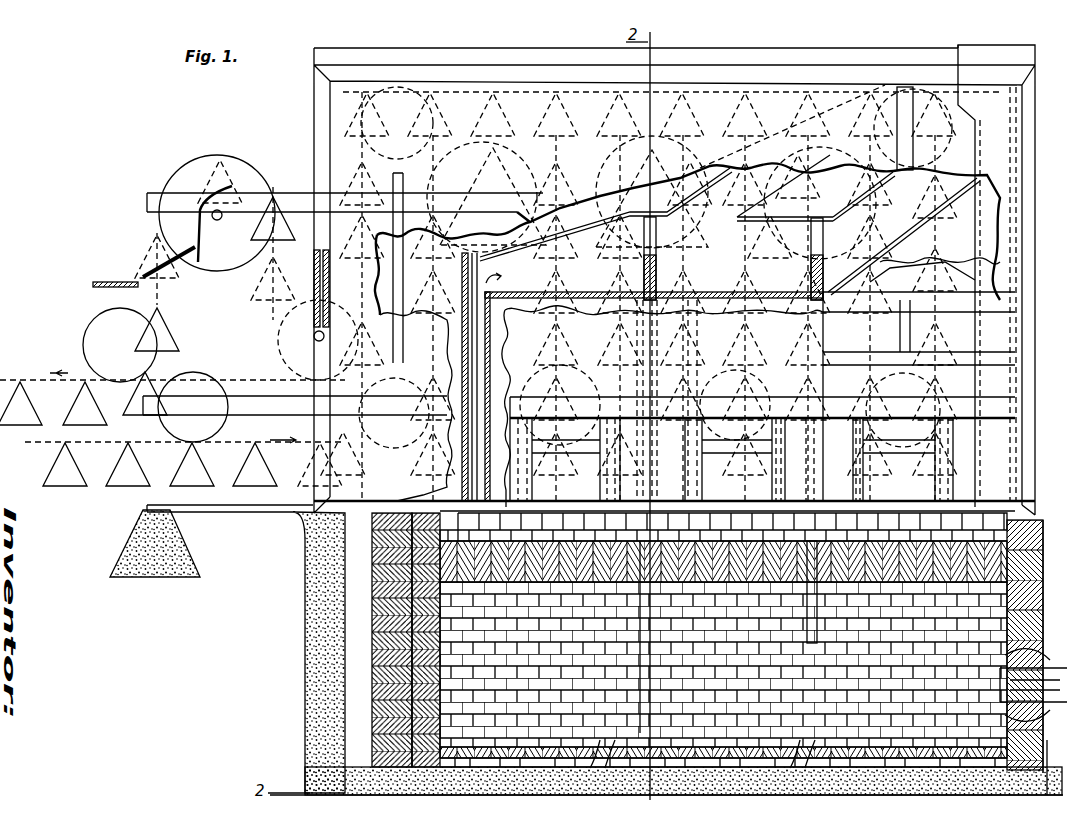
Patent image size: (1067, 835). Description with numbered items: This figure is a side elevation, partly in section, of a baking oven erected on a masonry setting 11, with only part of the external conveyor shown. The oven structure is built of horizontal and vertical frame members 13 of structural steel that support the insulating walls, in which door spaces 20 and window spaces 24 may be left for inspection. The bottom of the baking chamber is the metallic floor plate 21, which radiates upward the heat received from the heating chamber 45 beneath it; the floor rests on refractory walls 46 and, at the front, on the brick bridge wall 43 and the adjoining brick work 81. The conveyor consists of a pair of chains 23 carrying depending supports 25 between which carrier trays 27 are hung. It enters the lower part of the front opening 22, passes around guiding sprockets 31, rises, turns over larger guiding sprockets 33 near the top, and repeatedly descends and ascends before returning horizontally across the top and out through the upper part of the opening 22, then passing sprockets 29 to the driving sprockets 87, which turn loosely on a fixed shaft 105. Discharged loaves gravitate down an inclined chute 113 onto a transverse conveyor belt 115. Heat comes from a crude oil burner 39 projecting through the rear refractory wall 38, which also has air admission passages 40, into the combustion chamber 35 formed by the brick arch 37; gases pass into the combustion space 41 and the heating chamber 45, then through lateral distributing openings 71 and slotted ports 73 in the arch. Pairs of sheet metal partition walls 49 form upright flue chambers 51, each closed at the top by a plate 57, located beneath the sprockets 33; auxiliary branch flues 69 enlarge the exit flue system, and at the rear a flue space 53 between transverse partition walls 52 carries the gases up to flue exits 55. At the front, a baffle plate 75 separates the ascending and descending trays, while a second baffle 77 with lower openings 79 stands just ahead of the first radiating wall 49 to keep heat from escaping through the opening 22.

The masonry setting 11 is at (306, 570).
The frame members 13 is at (316, 107).
The door spaces 20 is at (745, 502).
The floor plate 21 is at (512, 506).
The entrance-exit opening 22 is at (316, 346).
The chains 23 is at (440, 90).
The window spaces 24 is at (960, 282).
The depending supports 25 is at (548, 113).
The carrier tray 27 is at (680, 114).
The guiding sprockets 29 is at (305, 372).
The guiding sprockets 31 is at (378, 103).
The larger guiding sprockets 33 is at (522, 182).
The combustion chamber 35 is at (938, 512).
The brick arch 37 is at (760, 510).
The refractory wall 38 is at (1030, 524).
The crude oil burner 39 is at (1000, 670).
The air admission passages 40 is at (996, 776).
The combustion space 41 is at (412, 665).
The bridge wall 43 is at (373, 617).
The heating chamber 45 is at (622, 508).
The refractory walls 46 is at (576, 510).
The partition walls 49 is at (642, 291).
The flue chambers 51 is at (500, 476).
The transverse partition walls 52 is at (1020, 302).
The flue or heating space 53 is at (1025, 384).
The flue exits 55 is at (1005, 52).
The plate 57 is at (660, 252).
The auxiliary branch flues 69 is at (860, 64).
The lateral distributing openings 71 is at (560, 762).
The slotted ports 73 is at (677, 538).
The partition wall or baffle plate 75 is at (398, 270).
The second baffle plate 77 is at (462, 362).
The ports or openings 79 is at (455, 490).
The brick work 81 is at (373, 537).
The driving sprockets 87 is at (248, 174).
The fixed shaft 105 is at (228, 228).
The inclined chute 113 is at (174, 268).
The conveyor belt 115 is at (113, 282).